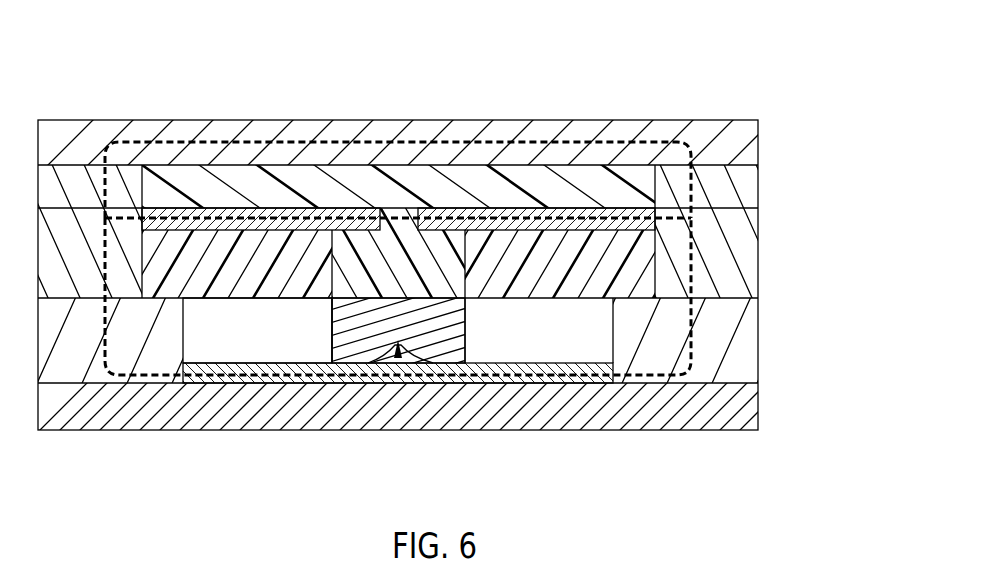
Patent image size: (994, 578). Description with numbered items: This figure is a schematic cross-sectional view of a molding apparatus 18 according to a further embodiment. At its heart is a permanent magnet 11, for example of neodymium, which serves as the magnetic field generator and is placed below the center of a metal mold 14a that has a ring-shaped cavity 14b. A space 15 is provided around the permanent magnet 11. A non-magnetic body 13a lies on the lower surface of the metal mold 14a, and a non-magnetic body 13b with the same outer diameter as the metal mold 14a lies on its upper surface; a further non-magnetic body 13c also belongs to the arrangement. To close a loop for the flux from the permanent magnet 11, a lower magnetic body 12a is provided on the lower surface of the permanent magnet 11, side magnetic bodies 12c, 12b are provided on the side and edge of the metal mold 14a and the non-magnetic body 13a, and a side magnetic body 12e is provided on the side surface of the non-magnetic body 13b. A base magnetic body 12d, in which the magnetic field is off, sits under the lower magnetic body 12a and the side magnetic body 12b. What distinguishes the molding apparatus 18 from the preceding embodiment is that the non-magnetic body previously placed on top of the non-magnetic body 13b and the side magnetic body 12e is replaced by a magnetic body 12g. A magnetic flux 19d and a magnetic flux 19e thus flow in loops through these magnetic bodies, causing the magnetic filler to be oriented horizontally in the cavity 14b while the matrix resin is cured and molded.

The molding apparatus 18 is at (140, 98).
The magnetic flux 19e is at (212, 140).
The magnetic flux 19d is at (104, 368).
The non-magnetic body 13b is at (294, 192).
The non-magnetic body 13c is at (413, 247).
The non-magnetic body 13a is at (625, 253).
The ring-shaped cavity 14b is at (533, 210).
The metal mold 14a is at (583, 226).
The magnetic body 12g is at (733, 143).
The side magnetic body 12e is at (733, 185).
The side magnetic body 12c is at (727, 250).
The side magnetic body 12b is at (728, 337).
The base magnetic body 12d is at (728, 408).
The lower magnetic body 12a is at (567, 385).
The permanent magnet 11 is at (437, 338).
The space 15 is at (265, 336).